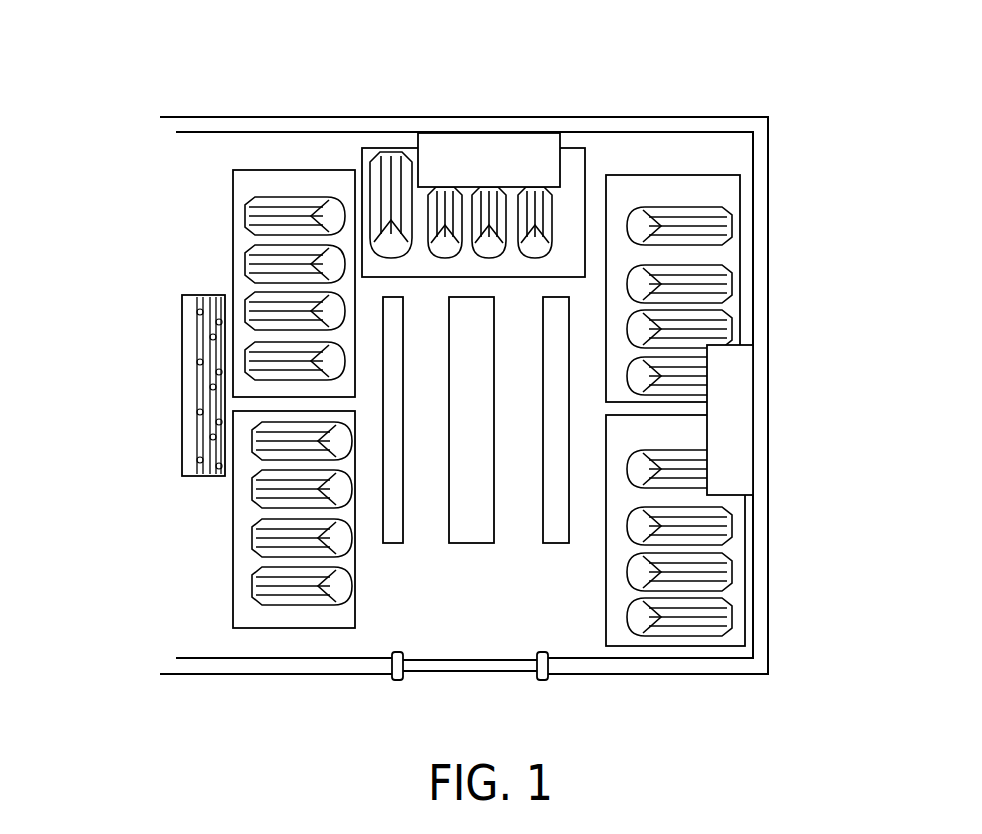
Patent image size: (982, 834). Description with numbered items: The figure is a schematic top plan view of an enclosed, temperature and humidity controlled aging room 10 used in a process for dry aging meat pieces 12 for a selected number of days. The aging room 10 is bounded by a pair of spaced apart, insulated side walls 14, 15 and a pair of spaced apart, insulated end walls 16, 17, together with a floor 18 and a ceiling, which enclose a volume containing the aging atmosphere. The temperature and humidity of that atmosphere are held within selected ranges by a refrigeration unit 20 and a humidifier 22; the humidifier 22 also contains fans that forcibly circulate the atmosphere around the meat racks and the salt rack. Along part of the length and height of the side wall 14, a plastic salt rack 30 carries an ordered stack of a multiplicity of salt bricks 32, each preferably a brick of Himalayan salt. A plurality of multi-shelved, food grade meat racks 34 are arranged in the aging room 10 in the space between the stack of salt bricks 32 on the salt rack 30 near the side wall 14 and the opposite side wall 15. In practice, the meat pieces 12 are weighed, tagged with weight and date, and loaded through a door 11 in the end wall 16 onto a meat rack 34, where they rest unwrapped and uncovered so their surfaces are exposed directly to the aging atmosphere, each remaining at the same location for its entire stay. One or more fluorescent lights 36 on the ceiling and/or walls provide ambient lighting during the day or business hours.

The aging room 10 is at (717, 683).
The door 11 is at (445, 672).
The meat pieces 12 is at (290, 247).
The side wall 14 is at (158, 203).
The side wall 15 is at (770, 218).
The end wall 16 is at (230, 667).
The end wall 17 is at (222, 117).
The floor 18 is at (485, 621).
The refrigeration unit 20 is at (733, 410).
The humidifier 22 is at (483, 143).
The salt rack 30 is at (193, 378).
The salt bricks 32 is at (195, 378).
The meat racks 34 is at (232, 187).
The fluorescent lights 36 is at (476, 510).